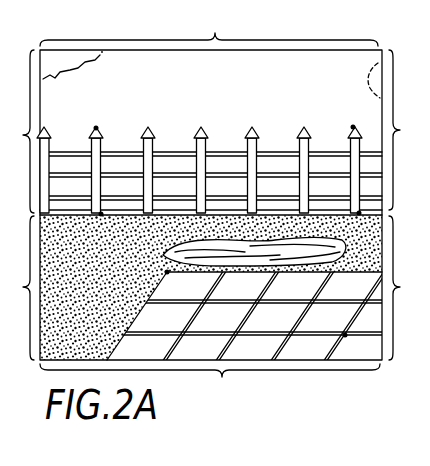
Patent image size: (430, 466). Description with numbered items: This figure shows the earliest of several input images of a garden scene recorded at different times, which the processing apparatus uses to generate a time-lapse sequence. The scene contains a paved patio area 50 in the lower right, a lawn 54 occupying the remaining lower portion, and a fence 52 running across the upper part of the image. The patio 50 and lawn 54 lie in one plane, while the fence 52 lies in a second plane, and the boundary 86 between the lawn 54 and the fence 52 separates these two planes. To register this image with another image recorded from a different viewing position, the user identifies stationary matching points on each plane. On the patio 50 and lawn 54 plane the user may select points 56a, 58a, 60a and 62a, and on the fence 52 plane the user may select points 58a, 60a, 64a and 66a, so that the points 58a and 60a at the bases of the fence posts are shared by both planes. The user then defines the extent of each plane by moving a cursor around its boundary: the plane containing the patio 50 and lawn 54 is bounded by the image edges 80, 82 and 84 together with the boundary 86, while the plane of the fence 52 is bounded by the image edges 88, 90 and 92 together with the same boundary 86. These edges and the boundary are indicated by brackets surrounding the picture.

The paved patio area 50 is at (282, 326).
The fence 52 is at (326, 133).
The lawn 54 is at (103, 306).
The matching point 56a is at (168, 275).
The matching point 58a is at (101, 216).
The matching point 60a is at (359, 215).
The matching point 62a is at (346, 337).
The matching point 64a is at (96, 127).
The matching point 66a is at (353, 126).
The image edge 80 is at (405, 288).
The image edge 82 is at (210, 383).
The image edge 84 is at (18, 288).
The boundary 86 is at (275, 208).
The image edge 88 is at (18, 131).
The image edge 90 is at (209, 26).
The image edge 92 is at (405, 130).